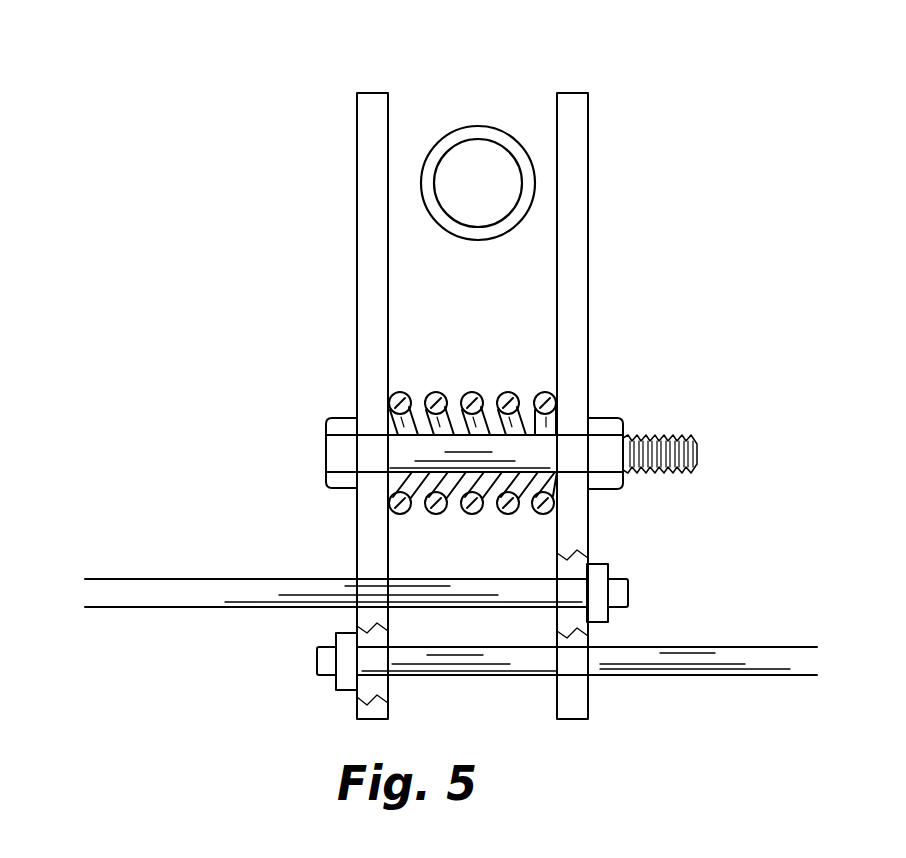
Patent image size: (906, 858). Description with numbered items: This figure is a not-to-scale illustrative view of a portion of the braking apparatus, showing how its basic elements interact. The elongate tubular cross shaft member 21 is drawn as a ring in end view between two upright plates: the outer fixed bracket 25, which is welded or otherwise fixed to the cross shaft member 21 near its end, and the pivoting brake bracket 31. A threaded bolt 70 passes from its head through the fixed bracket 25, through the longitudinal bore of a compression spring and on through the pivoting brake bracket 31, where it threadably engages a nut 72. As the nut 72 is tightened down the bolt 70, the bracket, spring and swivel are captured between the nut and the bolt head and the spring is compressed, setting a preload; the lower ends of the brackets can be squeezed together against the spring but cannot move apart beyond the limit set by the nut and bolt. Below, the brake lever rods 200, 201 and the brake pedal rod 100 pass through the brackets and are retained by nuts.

The elongate tubular cross shaft member 21 is at (483, 132).
The outer fixed bracket 25 is at (369, 367).
The pivoting brake bracket 31 is at (575, 349).
The bolt 70 is at (337, 454).
The nut 72 is at (607, 427).
The brake pedal rod 100 is at (763, 658).
The brake lever rod 200 is at (338, 553).
The brake lever rod 201 is at (185, 590).